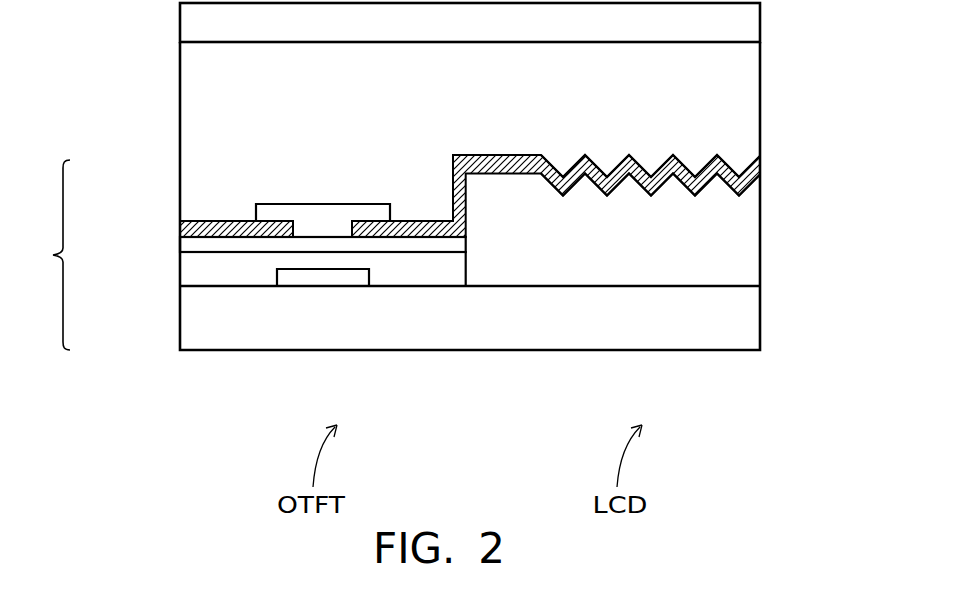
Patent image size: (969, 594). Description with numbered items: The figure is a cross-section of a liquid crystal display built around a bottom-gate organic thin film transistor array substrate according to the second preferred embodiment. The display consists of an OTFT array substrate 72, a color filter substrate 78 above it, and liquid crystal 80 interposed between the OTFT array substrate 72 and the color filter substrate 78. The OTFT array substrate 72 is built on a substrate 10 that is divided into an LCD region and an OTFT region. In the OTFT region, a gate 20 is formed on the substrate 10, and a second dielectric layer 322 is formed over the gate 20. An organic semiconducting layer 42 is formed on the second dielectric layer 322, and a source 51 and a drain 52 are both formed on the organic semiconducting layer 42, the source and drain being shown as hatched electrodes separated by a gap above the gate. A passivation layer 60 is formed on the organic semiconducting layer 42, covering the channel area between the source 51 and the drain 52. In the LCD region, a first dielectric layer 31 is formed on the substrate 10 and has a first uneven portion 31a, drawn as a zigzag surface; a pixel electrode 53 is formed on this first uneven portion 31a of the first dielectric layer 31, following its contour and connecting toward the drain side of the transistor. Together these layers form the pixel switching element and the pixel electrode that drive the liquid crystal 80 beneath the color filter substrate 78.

The substrate 10 is at (750, 323).
The gate 20 is at (322, 278).
The first dielectric layer 31 is at (750, 243).
The first uneven portion 31a is at (640, 180).
The second dielectric layer 322 is at (190, 271).
The organic semiconducting layer 42 is at (190, 245).
The source 51 is at (180, 228).
The drain 52 is at (427, 229).
The pixel electrode 53 is at (598, 178).
The passivation layer 60 is at (270, 211).
The OTFT array substrate 72 is at (45, 255).
The color filter substrate 78 is at (750, 26).
The liquid crystal 80 is at (750, 60).